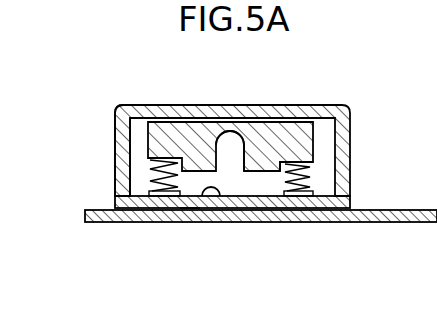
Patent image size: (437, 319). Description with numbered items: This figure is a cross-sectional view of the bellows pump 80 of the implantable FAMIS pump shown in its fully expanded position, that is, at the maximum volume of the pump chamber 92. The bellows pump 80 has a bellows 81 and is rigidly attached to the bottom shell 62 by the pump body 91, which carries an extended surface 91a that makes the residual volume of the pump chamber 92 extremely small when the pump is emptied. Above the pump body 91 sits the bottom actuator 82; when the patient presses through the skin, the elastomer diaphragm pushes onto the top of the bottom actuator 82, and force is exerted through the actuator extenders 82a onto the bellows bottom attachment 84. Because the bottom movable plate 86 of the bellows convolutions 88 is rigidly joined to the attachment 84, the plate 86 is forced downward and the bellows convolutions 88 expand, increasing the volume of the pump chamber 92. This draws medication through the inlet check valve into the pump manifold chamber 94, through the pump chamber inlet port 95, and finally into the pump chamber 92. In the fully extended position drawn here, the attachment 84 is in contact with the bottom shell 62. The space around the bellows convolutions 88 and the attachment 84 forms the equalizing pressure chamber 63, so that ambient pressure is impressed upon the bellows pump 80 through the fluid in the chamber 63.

The bottom shell 62 is at (112, 223).
The equalizing pressure chamber 63 is at (144, 178).
The bellows pump 80 is at (314, 93).
The bellows 81 is at (189, 216).
The bottom actuator 82 is at (186, 105).
The actuator extenders 82a is at (114, 142).
The bellows bottom attachment 84 is at (348, 197).
The bottom movable plate 86 is at (224, 183).
The bellows convolutions 88 is at (312, 178).
The pump body 91 is at (316, 137).
The extended surface 91a is at (274, 174).
The pump chamber 92 is at (232, 182).
The pump manifold chamber 94 is at (230, 143).
The pump chamber inlet port 95 is at (269, 173).